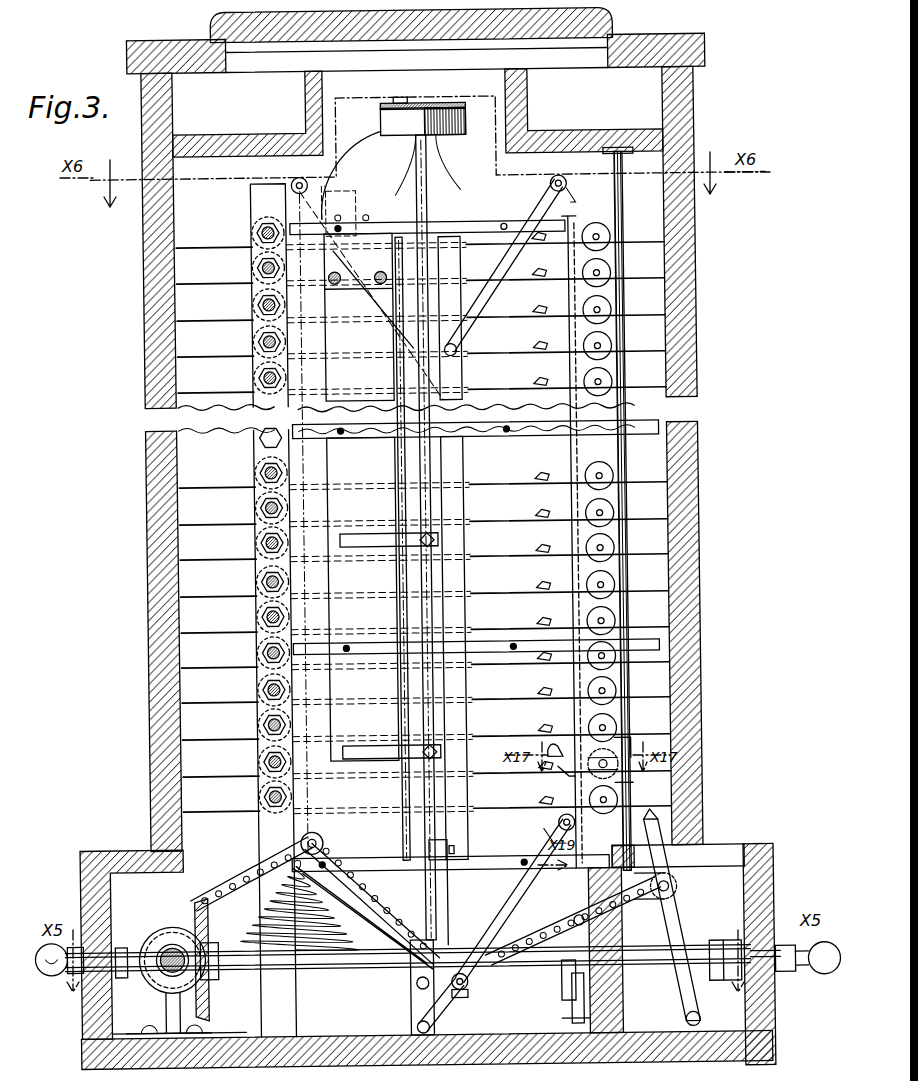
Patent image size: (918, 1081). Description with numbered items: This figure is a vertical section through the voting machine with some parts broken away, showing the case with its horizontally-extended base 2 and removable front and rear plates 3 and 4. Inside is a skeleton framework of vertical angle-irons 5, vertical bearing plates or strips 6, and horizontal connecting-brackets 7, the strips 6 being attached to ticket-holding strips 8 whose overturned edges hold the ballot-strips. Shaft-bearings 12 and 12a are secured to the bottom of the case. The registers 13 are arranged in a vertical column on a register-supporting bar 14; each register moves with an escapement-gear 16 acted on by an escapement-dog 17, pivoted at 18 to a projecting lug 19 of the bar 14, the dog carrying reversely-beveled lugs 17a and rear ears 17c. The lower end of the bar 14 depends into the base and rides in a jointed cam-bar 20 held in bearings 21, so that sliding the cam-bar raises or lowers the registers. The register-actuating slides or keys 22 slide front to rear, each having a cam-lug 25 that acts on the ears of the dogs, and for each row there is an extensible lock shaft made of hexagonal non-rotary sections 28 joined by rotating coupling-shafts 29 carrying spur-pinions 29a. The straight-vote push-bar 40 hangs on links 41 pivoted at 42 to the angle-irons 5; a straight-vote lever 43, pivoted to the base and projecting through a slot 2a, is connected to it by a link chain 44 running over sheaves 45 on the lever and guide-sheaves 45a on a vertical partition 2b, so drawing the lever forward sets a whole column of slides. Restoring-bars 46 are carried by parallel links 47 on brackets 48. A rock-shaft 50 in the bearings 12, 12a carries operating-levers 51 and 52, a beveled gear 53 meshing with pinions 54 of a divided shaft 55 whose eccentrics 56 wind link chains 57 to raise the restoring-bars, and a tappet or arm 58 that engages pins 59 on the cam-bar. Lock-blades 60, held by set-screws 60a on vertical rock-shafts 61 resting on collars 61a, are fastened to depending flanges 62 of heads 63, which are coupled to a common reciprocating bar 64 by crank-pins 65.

The base 2 is at (84, 880).
The slot 2a is at (722, 858).
The vertical partition 2b is at (614, 1010).
The front plate 3 is at (700, 400).
The rear plate 4 is at (152, 427).
The vertical angle-irons 5 is at (270, 836).
The vertical bearing plates or strips 6 is at (427, 136).
The horizontal connecting-brackets 7 is at (500, 224).
The ticket-holding strips 8 is at (628, 466).
The shaft-bearing 12 is at (206, 1034).
The shaft-bearing 12a is at (725, 942).
The registers 13 is at (590, 336).
The register-supporting bar 14 is at (572, 452).
The escapement-gear 16 is at (637, 740).
The escapement-dog 17 is at (580, 770).
The reversely-beveled lugs 17a is at (632, 788).
The ears 17c is at (550, 746).
The pivot 18 is at (552, 782).
The projecting lug 19 is at (555, 835).
The cam-bar 20 is at (561, 1000).
The bearings 21 is at (598, 1025).
The register-actuating slides or keys 22 is at (250, 392).
The cam-lug 25 is at (544, 354).
The non-rotary sections 28 is at (262, 330).
The rotating coupling-shafts 29 is at (272, 652).
The spur-pinions 29a is at (262, 472).
The straight-vote push-bar 40 is at (436, 402).
The links 41 is at (322, 210).
The pivot 42 is at (302, 180).
The straight-vote lever 43 is at (696, 1002).
The link chain 44 is at (455, 1020).
The sheaves 45 is at (673, 889).
The guide-sheaves 45a is at (570, 924).
The restoring-bar 46 is at (468, 416).
The parallel links 47 is at (502, 252).
The brackets 48 is at (574, 190).
The rock-shaft 50 is at (356, 972).
The operating-lever 51 is at (818, 974).
The operating-lever 52 is at (40, 976).
The beveled gear 53 is at (208, 940).
The pinions 54 is at (162, 926).
The divided shaft 55 is at (172, 918).
The eccentrics 56 is at (152, 990).
The link chains 57 is at (340, 855).
The tappet or arm 58 is at (500, 985).
The pins or projections 59 is at (480, 1002).
The lock-blades 60 is at (326, 392).
The set-screws 60a is at (438, 540).
The vertical rock-shaft 61 is at (440, 576).
The collars 61a is at (428, 850).
The depending flanges 62 is at (372, 158).
The heads 63 is at (446, 128).
The reciprocating bar 64 is at (458, 106).
The crank-pins 65 is at (414, 99).